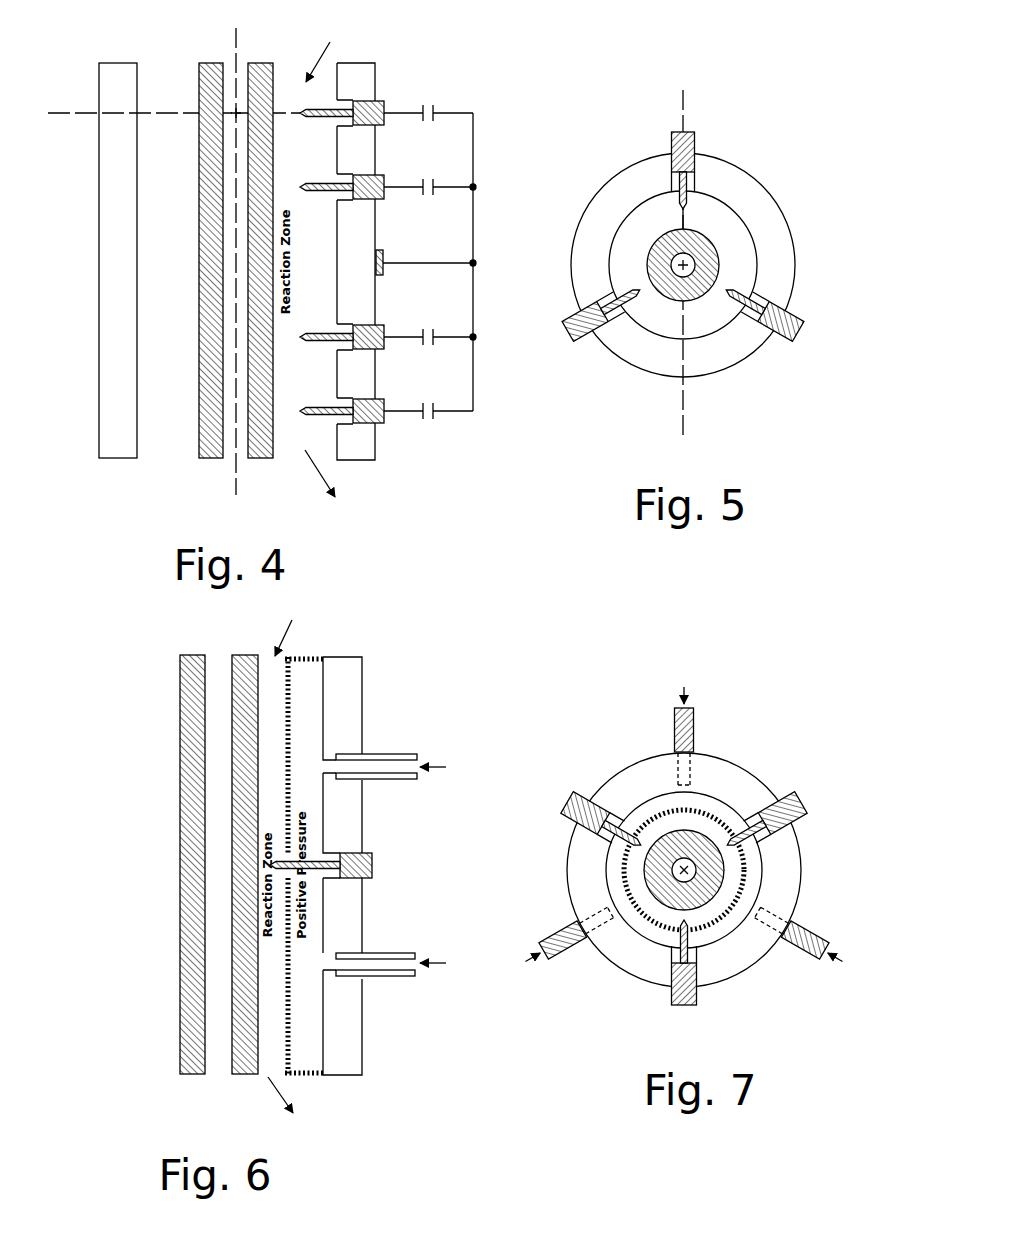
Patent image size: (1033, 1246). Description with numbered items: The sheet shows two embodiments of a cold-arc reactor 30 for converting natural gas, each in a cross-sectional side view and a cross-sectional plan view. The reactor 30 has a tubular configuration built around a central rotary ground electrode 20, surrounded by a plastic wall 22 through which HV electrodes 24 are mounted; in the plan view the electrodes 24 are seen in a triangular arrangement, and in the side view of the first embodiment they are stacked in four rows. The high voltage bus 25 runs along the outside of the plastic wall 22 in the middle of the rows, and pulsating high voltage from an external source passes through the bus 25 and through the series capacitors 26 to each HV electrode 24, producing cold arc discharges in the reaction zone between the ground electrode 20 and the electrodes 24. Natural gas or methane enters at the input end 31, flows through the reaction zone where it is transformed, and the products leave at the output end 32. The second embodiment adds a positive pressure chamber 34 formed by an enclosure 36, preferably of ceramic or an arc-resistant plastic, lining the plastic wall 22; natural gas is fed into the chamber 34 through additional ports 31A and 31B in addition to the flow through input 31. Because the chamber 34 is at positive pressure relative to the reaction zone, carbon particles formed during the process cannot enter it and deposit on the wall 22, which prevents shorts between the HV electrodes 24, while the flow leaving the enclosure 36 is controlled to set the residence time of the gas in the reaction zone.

In FIG. 4, the rotary ground electrode 20 is at (260, 452).
In FIG. 5, the rotary ground electrode 20 is at (660, 290).
In FIG. 6, the rotary ground electrode 20 is at (238, 815).
In FIG. 4, the plastic wall 22 is at (121, 458).
In FIG. 5, the plastic wall 22 is at (735, 345).
In FIG. 6, the plastic wall 22 is at (352, 1030).
In FIG. 7, the plastic wall 22 is at (733, 968).
In FIG. 4, the HV electrodes 24 is at (672, 135).
In FIG. 5, the HV electrodes 24 is at (572, 320).
In FIG. 6, the HV electrodes 24 is at (374, 866).
In FIG. 7, the HV electrodes 24 is at (575, 792).
In FIG. 4, the high voltage bus 25 is at (380, 258).
In FIG. 4, the capacitors 26 is at (440, 182).
In FIG. 5, the reactor 30 is at (752, 156).
In FIG. 4, the input end 31 is at (308, 42).
In FIG. 6, the input end 31 is at (278, 652).
In FIG. 6, the additional port 31A is at (408, 753).
In FIG. 7, the additional port 31A is at (696, 722).
In FIG. 6, the additional port 31B is at (406, 952).
In FIG. 4, the output end 32 is at (318, 480).
In FIG. 6, the output end 32 is at (272, 1099).
In FIG. 6, the positive pressure chamber 34 is at (310, 668).
In FIG. 7, the positive pressure chamber 34 is at (753, 878).
In FIG. 6, the enclosure 36 is at (290, 858).
In FIG. 7, the enclosure 36 is at (746, 893).